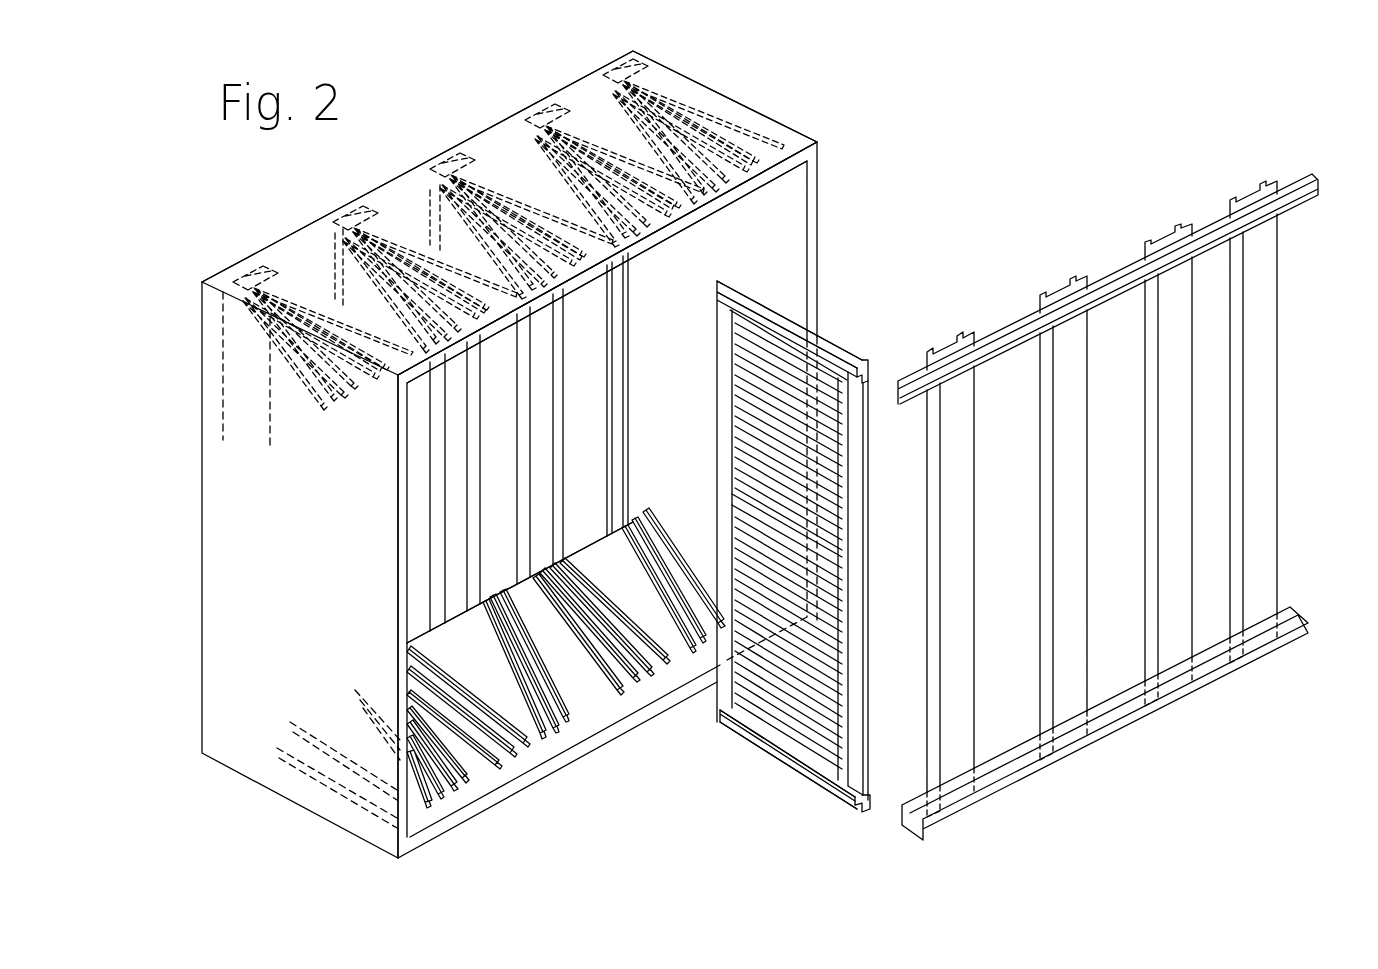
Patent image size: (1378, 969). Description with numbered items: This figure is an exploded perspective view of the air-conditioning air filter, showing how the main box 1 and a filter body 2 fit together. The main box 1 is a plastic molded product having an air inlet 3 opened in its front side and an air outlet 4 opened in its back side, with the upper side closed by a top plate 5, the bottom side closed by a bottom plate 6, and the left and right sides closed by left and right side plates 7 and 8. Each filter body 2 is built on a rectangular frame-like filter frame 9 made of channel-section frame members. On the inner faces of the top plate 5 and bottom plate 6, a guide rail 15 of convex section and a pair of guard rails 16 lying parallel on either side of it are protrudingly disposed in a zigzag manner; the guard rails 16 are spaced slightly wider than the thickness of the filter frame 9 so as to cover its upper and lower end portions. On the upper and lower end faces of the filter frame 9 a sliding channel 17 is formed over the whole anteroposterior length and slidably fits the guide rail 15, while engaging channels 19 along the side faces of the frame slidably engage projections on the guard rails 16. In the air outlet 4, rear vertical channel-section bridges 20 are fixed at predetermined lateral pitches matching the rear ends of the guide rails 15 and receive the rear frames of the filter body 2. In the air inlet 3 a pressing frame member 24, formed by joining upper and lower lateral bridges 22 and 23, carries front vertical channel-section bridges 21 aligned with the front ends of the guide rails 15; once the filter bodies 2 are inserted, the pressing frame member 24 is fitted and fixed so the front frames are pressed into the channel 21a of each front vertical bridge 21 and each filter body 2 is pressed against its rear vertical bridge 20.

The main box 1 is at (448, 148).
The filter body 2 is at (778, 550).
The air inlet 3 is at (776, 238).
The air outlet 4 is at (593, 318).
The top plate 5 is at (735, 105).
The bottom plate 6 is at (483, 782).
The left side plate 7 is at (260, 772).
The right side plate 8 is at (810, 200).
The filter frame 9 is at (862, 597).
The guide rail 15 is at (737, 160).
The guard rail 16 is at (737, 155).
The sliding channel 17 is at (828, 333).
The engaging channel 19 is at (720, 318).
The rear vertical channel-section bridge 20 is at (545, 375).
The front vertical channel-section bridge 21 is at (1150, 462).
The channel of front vertical bridge 21a is at (1055, 290).
The upper lateral bridge 22 is at (1210, 222).
The lower lateral bridge 23 is at (1195, 690).
The pressing frame member 24 is at (1120, 489).